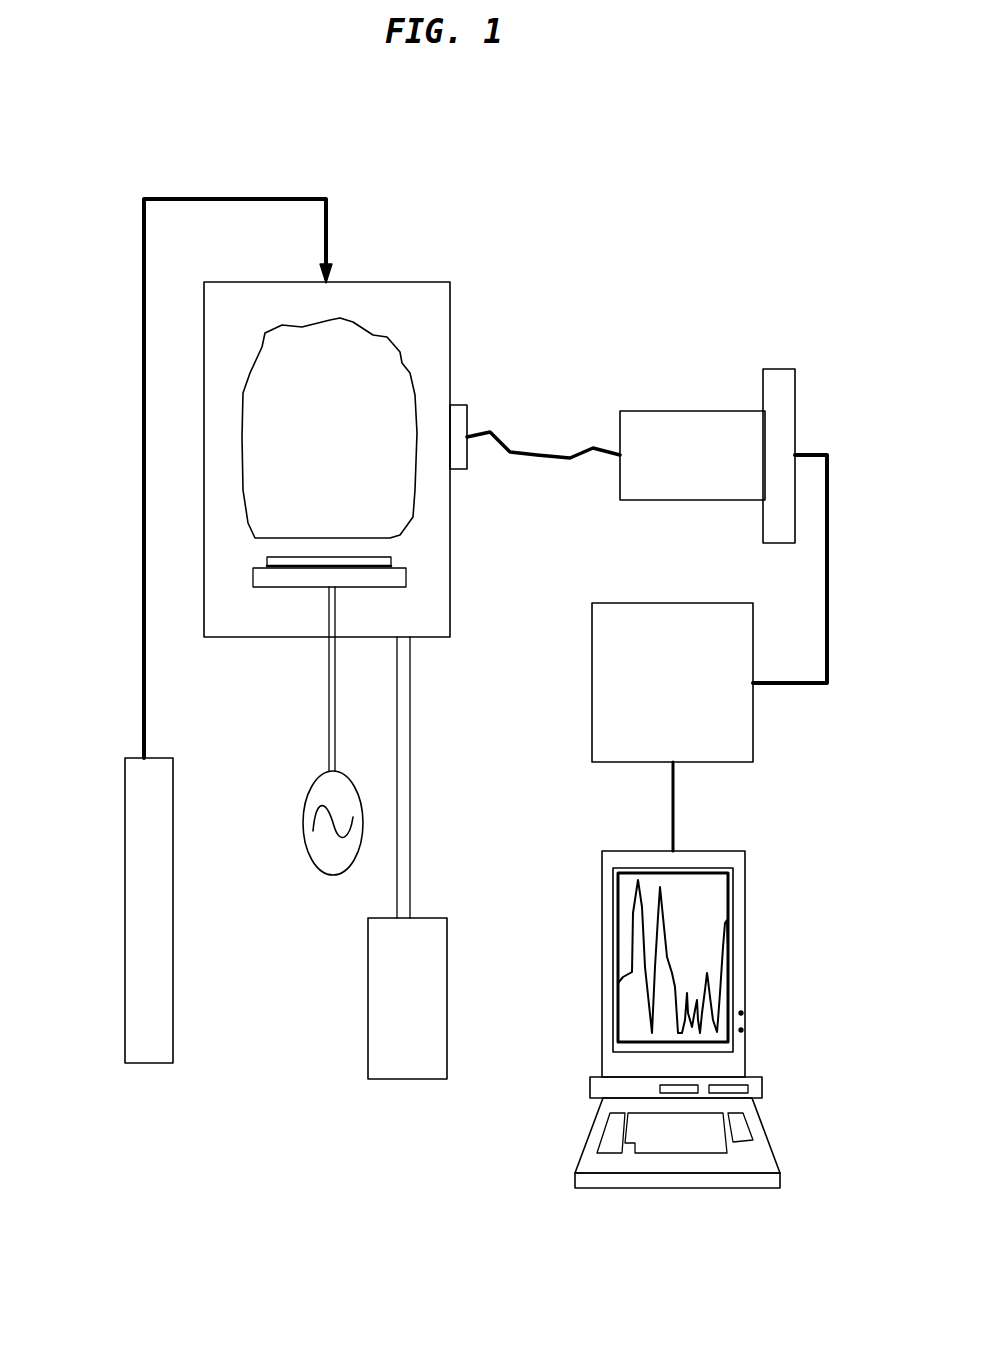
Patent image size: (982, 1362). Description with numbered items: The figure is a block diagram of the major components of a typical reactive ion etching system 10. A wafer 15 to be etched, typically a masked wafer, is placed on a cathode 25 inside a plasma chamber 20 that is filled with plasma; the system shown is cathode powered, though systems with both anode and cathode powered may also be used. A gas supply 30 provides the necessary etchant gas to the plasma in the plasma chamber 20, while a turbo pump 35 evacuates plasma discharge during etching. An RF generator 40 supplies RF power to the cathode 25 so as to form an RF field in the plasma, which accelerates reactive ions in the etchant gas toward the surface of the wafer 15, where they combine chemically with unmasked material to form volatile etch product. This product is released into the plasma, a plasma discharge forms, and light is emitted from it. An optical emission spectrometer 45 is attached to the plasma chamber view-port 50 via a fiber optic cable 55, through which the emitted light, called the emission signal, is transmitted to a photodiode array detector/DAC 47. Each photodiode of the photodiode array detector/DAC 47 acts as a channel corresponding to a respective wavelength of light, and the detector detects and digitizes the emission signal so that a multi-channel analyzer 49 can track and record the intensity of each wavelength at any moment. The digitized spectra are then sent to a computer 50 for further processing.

The RIE system 10 is at (114, 124).
The wafer 15 is at (398, 563).
The plasma chamber 20 is at (437, 302).
The cathode 25 is at (398, 578).
The gas supply 30 is at (133, 858).
The turbo pump 35 is at (435, 973).
The RF generator 40 is at (317, 790).
The optical emission spectrometer 45 is at (677, 410).
The photodiode array detector/DAC 47 is at (783, 387).
The multi-channel analyzer 49 is at (602, 689).
The view-port / computer 50 is at (462, 405).
The fiber optic cable 55 is at (540, 459).